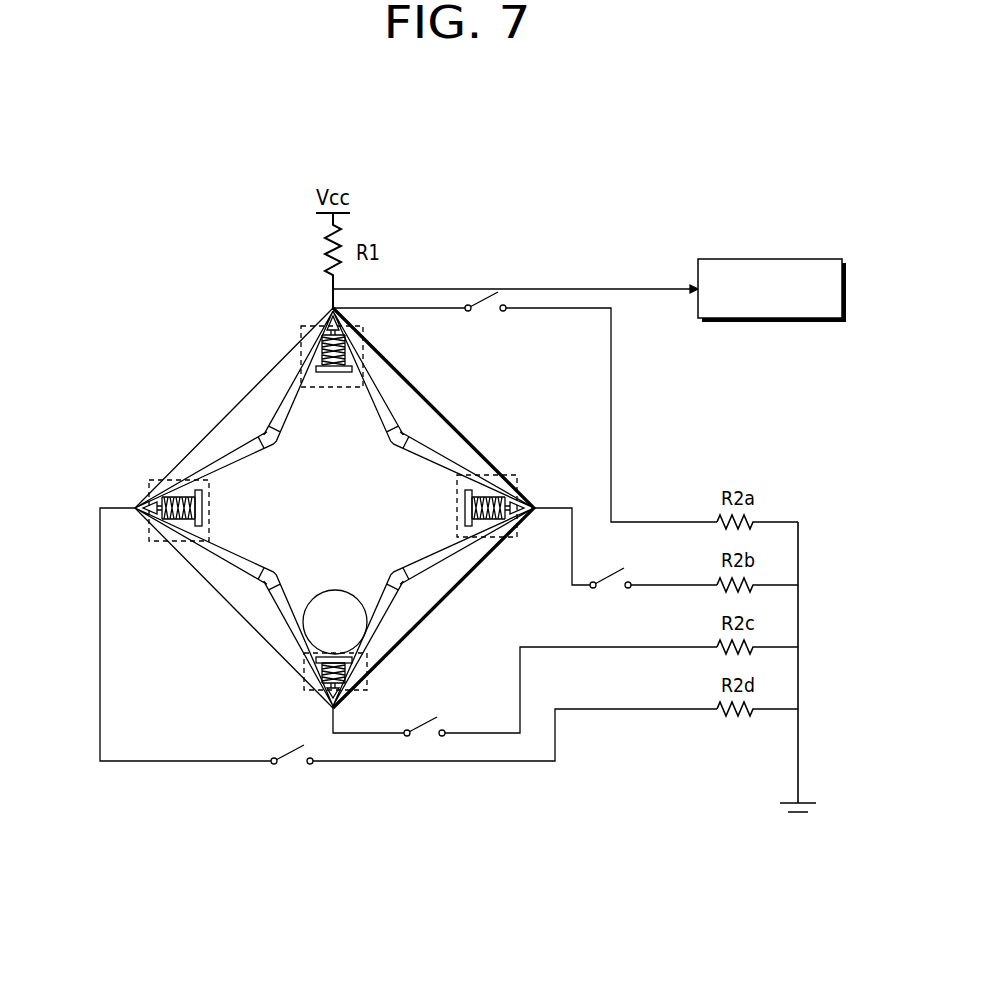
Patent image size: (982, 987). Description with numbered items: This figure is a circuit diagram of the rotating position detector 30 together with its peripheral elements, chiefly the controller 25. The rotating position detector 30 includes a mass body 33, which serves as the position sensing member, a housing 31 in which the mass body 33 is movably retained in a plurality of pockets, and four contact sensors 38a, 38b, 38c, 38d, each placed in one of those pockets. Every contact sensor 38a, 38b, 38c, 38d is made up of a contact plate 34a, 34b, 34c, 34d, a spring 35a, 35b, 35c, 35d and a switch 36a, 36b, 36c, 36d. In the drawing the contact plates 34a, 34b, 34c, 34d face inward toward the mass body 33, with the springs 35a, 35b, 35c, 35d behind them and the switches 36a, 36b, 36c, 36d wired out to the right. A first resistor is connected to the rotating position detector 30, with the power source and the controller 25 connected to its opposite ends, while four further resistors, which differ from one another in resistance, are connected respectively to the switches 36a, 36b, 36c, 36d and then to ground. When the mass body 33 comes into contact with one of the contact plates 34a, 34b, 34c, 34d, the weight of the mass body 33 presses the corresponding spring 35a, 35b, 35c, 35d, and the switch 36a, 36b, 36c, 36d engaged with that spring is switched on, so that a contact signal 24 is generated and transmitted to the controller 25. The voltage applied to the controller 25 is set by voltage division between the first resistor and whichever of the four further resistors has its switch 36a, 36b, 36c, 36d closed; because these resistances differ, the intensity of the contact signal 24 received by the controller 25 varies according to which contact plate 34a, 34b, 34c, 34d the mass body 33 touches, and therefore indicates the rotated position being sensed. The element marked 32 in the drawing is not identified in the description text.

The contact signal 24 is at (630, 289).
The controller 25 is at (795, 323).
The rotating position detector 30 is at (320, 488).
The housing 31 is at (240, 400).
The conductive frame portion 32 is at (432, 594).
The mass body 33 is at (321, 610).
The contact plate 34a is at (303, 378).
The contact plate 34b is at (470, 520).
The contact plate 34c is at (305, 655).
The contact plate 34d is at (198, 478).
The spring 35a is at (347, 352).
The spring 35b is at (500, 502).
The spring 35c is at (330, 680).
The spring 35d is at (178, 520).
The switch 36a is at (504, 312).
The switch 36b is at (628, 590).
The switch 36c is at (442, 730).
The switch 36d is at (310, 765).
The contact sensor 38a is at (310, 325).
The contact sensor 38b is at (535, 500).
The contact sensor 38c is at (367, 698).
The contact sensor 38d is at (150, 536).